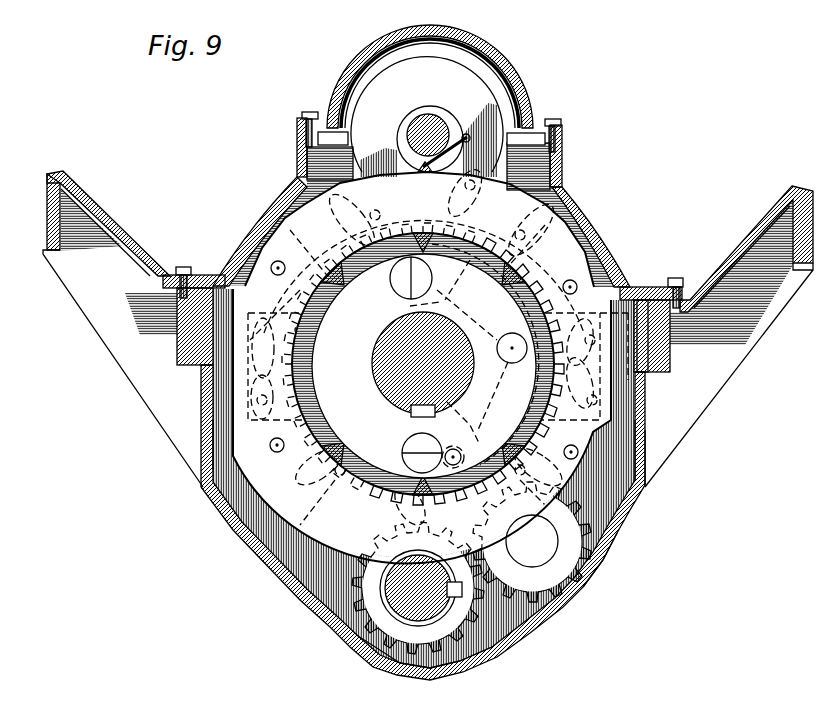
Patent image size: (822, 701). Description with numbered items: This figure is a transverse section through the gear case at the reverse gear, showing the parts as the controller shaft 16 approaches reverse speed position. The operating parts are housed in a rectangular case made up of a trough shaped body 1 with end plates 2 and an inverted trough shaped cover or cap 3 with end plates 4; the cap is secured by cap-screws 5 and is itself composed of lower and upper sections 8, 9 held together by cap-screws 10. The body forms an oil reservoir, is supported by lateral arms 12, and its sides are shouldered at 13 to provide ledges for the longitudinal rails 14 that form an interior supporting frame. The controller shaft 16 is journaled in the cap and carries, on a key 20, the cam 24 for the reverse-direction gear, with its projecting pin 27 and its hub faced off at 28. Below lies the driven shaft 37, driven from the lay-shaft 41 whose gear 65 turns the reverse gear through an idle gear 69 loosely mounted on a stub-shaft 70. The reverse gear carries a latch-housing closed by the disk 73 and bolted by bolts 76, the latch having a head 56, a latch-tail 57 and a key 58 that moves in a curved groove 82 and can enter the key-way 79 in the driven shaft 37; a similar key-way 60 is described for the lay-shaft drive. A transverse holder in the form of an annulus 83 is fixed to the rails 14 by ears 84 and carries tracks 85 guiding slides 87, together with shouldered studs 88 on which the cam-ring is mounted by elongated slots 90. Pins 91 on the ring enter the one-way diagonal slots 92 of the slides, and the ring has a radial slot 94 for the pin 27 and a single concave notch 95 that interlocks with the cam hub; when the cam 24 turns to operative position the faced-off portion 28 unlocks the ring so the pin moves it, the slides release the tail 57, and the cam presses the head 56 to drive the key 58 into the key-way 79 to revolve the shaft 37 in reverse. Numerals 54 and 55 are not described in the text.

The trough shaped body 1 is at (622, 527).
The end plates 2 is at (641, 492).
The cover or cap 3 is at (590, 226).
The end plates 4 is at (576, 206).
The cap-screws 5 is at (183, 267).
The lower section 8 is at (298, 166).
The upper section 9 is at (514, 80).
The cap-screws 10 is at (310, 113).
The lateral arms 12 is at (150, 302).
The shoulders 13 is at (176, 338).
The longitudinal rails 14 is at (177, 362).
The controller shaft 16 is at (448, 125).
The key 20 is at (417, 116).
The peripheral cam 24 is at (456, 73).
The projecting pin 27 is at (466, 160).
The faced-off portion 28 is at (470, 140).
The driven shaft 37 is at (423, 364).
The lay-shaft 41 is at (396, 608).
The pin 54 is at (511, 364).
The lever arm 55 is at (492, 396).
The head 56 is at (507, 337).
The latch-tail 57 is at (446, 403).
The key 58 is at (467, 300).
The key-way 60 is at (424, 445).
The gear 65 is at (439, 652).
The idle gear 69 is at (606, 556).
The stub-shaft 70 is at (546, 552).
The disk 73 is at (423, 364).
The bolts 76 is at (391, 284).
The key-way 79 is at (410, 439).
The curved groove 82 is at (412, 305).
The annulus 83 is at (616, 293).
The ears 84 is at (207, 386).
The tracks 85 is at (646, 462).
The slides 87 is at (605, 248).
The shouldered studs 88 is at (272, 265).
The elongated slots 90 is at (212, 434).
The pins 91 is at (238, 548).
The diagonal slots 92 is at (279, 588).
The radial slot 94 is at (432, 240).
The concave notch 95 is at (426, 174).